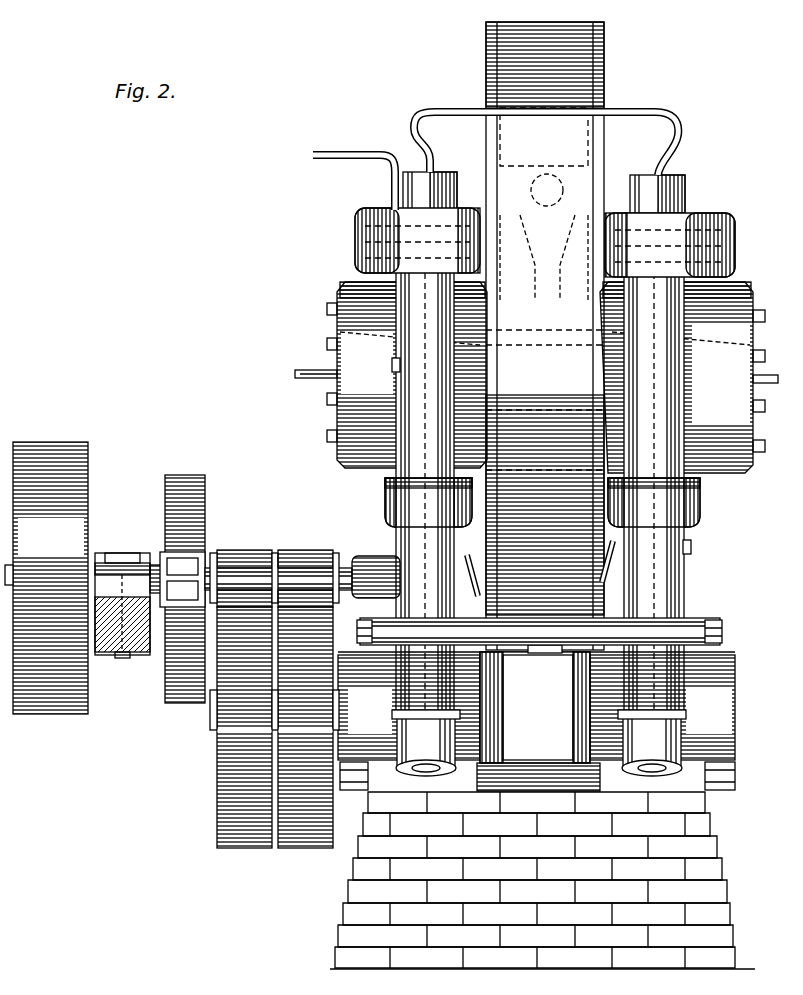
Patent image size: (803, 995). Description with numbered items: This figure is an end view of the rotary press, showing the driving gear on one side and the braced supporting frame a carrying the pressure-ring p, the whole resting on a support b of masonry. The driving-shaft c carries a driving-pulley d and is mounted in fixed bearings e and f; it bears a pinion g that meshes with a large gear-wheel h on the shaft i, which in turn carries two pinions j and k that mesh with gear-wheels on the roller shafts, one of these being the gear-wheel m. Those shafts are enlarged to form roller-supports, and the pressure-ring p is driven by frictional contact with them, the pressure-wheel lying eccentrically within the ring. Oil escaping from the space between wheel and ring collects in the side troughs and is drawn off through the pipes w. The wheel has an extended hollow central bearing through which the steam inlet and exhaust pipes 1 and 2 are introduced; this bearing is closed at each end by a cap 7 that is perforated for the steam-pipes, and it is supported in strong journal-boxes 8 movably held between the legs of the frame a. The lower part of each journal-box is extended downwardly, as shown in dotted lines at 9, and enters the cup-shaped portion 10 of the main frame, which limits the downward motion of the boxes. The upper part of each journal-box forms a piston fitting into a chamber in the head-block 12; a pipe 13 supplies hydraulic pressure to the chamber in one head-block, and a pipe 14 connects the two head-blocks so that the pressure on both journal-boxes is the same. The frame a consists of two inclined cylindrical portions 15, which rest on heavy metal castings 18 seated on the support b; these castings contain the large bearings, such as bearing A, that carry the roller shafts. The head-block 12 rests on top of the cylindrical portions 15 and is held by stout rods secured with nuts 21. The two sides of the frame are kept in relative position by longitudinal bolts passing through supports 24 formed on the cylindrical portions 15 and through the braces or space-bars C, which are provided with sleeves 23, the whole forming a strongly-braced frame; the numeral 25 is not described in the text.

The steam inlet pipe 1 is at (766, 384).
The steam exhaust pipe 2 is at (306, 379).
The cap 7 is at (337, 332).
The journal-box 8 is at (358, 288).
The downward extension of journal-box 9 is at (385, 488).
The cup-shaped portion 10 is at (385, 504).
The head-block 12 is at (356, 234).
The pipe 13 is at (346, 152).
The pipe 14 is at (438, 108).
The cylindrical portion 15 is at (392, 365).
The heavy metal casting 18 is at (430, 776).
The nut 21 is at (440, 176).
The sleeve 23 is at (545, 790).
The support 24 is at (708, 620).
The connection 25 is at (548, 650).
The frame a is at (540, 463).
The support b is at (542, 880).
The driving-shaft c is at (98, 553).
The driving-pulley d is at (88, 467).
The bearing e is at (153, 563).
The bearing f is at (370, 557).
The pinion g is at (213, 550).
The gear-wheel h is at (205, 482).
The shaft i is at (255, 852).
The pinion j is at (256, 550).
The pinion k is at (302, 550).
The gear-wheel m is at (315, 852).
The pressure-ring p is at (545, 336).
The pipe w is at (464, 560).
The bearing A is at (536, 706).
The brace or space-bar C is at (535, 707).